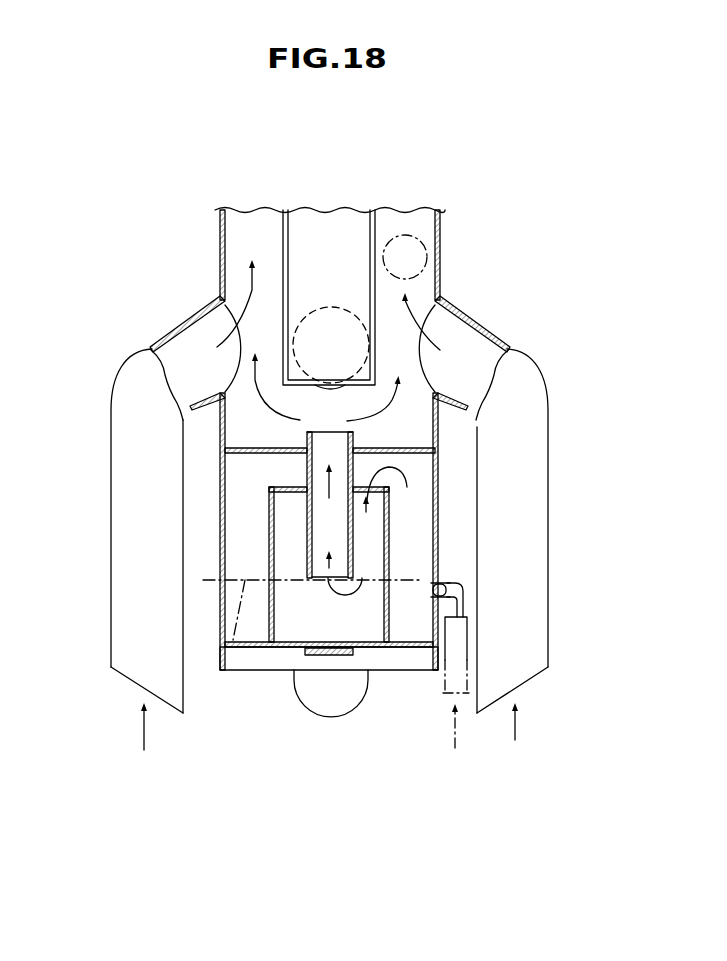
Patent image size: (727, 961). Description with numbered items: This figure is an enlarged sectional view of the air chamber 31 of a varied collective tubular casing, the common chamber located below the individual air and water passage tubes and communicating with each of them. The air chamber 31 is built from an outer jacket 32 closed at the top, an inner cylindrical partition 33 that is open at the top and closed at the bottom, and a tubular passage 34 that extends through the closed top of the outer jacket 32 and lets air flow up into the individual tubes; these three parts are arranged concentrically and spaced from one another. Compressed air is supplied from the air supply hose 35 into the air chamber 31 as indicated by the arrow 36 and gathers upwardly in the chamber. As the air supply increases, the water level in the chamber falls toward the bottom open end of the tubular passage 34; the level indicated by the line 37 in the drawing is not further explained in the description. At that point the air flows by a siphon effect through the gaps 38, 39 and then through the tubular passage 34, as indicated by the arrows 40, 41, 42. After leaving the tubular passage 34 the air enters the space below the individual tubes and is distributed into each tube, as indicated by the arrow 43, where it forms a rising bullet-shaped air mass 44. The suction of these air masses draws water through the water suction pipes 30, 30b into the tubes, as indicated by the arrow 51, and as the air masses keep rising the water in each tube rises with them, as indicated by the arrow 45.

The water suction pipe 30 is at (150, 620).
The water suction pipe 30b is at (515, 632).
The air chamber 31 is at (446, 546).
The outer jacket 32 is at (440, 567).
The inner cylindrical partition 33 is at (387, 527).
The tubular passage 34 is at (407, 452).
The air supply hose 35 is at (463, 652).
The arrow 36 is at (455, 733).
The liquid level line 37 is at (233, 645).
The gap 38 is at (290, 513).
The gap 39 is at (327, 490).
The arrow 40 is at (410, 477).
The arrow 41 is at (345, 593).
The arrow 42 is at (263, 457).
The arrow 43 is at (257, 390).
The bullet-shaped air mass 44 is at (412, 253).
The arrow 45 is at (252, 308).
The arrow 51 is at (143, 722).